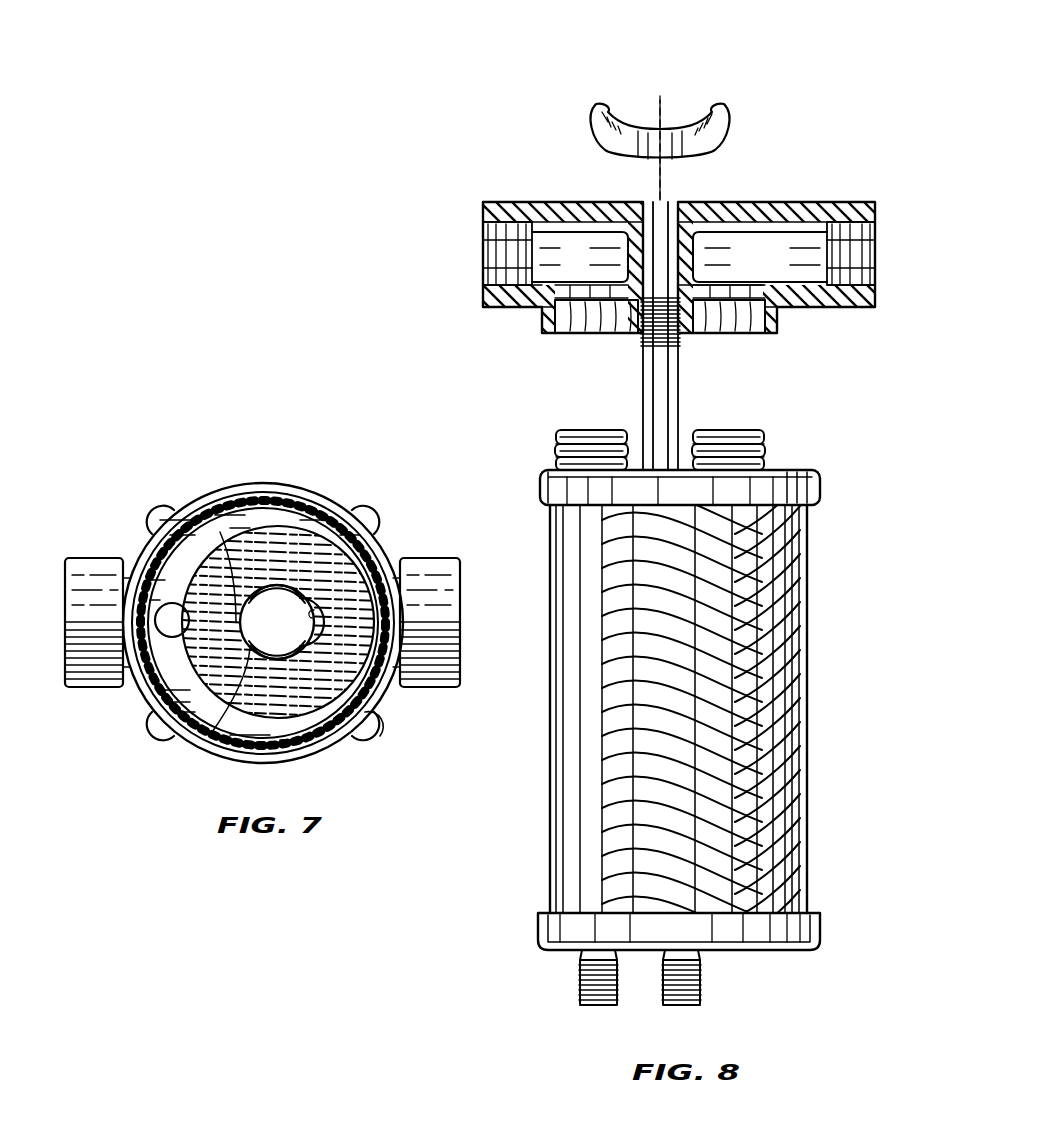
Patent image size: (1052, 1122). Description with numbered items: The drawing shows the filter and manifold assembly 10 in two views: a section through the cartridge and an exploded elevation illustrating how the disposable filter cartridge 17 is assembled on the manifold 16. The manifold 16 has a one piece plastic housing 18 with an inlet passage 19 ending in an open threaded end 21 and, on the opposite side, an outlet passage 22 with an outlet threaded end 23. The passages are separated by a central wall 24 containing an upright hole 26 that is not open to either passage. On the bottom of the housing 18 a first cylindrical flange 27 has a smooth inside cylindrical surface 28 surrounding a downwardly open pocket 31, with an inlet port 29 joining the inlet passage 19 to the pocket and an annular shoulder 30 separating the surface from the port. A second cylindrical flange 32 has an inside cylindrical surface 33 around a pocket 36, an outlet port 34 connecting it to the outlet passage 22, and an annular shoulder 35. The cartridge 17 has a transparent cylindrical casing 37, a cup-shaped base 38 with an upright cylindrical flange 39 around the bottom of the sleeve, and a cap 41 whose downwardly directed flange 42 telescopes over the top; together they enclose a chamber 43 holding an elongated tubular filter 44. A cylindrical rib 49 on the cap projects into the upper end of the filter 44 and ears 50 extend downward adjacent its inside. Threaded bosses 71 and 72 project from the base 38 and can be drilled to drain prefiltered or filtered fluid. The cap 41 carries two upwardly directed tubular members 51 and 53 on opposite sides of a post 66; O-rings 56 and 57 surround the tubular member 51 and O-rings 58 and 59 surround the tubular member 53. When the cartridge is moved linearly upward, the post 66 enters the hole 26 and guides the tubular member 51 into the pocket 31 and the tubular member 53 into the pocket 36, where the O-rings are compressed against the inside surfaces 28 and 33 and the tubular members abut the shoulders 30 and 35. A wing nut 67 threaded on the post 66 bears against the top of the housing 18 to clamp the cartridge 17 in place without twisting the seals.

In FIG. 8, the filter and manifold assembly 10 is at (790, 132).
In FIG. 8, the manifold 16 is at (538, 200).
In FIG. 7, the manifold 16 is at (62, 576).
In FIG. 8, the filter cartridge 17 is at (808, 645).
In FIG. 8, the housing 18 is at (790, 212).
In FIG. 8, the inlet passage 19 is at (580, 257).
In FIG. 8, the threaded end 21 is at (483, 278).
In FIG. 8, the outlet passage 22 is at (760, 257).
In FIG. 8, the outlet threaded end 23 is at (875, 278).
In FIG. 8, the central wall 24 is at (622, 226).
In FIG. 8, the upright hole 26 is at (665, 226).
In FIG. 8, the first cylindrical flange 27 is at (540, 322).
In FIG. 8, the inside cylindrical surface 28 is at (568, 320).
In FIG. 8, the inlet port 29 is at (580, 294).
In FIG. 7, the inlet port 29 is at (170, 620).
In FIG. 8, the annular shoulder 30 is at (583, 318).
In FIG. 8, the pocket 31 is at (607, 314).
In FIG. 8, the second cylindrical flange 32 is at (780, 320).
In FIG. 8, the inside cylindrical surface 33 is at (750, 323).
In FIG. 8, the outlet port 34 is at (719, 316).
In FIG. 7, the outlet port 34 is at (313, 610).
In FIG. 8, the annular shoulder 35 is at (697, 314).
In FIG. 8, the pocket 36 is at (735, 320).
In FIG. 8, the casing 37 is at (808, 794).
In FIG. 7, the casing 37 is at (345, 736).
In FIG. 8, the base 38 is at (785, 950).
In FIG. 8, the upright cylindrical flange 39 is at (820, 930).
In FIG. 8, the cap 41 is at (810, 472).
In FIG. 8, the downwardly directed flange 42 is at (820, 490).
In FIG. 7, the downwardly directed flange 42 is at (273, 482).
In FIG. 7, the chamber 43 is at (177, 684).
In FIG. 8, the filter 44 is at (742, 688).
In FIG. 7, the filter 44 is at (212, 732).
In FIG. 7, the cylindrical rib 49 is at (221, 486).
In FIG. 7, the ears 50 is at (300, 596).
In FIG. 8, the tubular member 51 is at (576, 432).
In FIG. 8, the tubular member 53 is at (744, 432).
In FIG. 8, the O-ring 56 is at (556, 441).
In FIG. 8, the O-ring 57 is at (556, 463).
In FIG. 8, the O-ring 58 is at (765, 444).
In FIG. 8, the O-ring 59 is at (765, 463).
In FIG. 8, the post 66 is at (657, 397).
In FIG. 8, the wing nut 67 is at (707, 122).
In FIG. 8, the threaded boss 71 is at (578, 986).
In FIG. 8, the threaded boss 72 is at (702, 990).